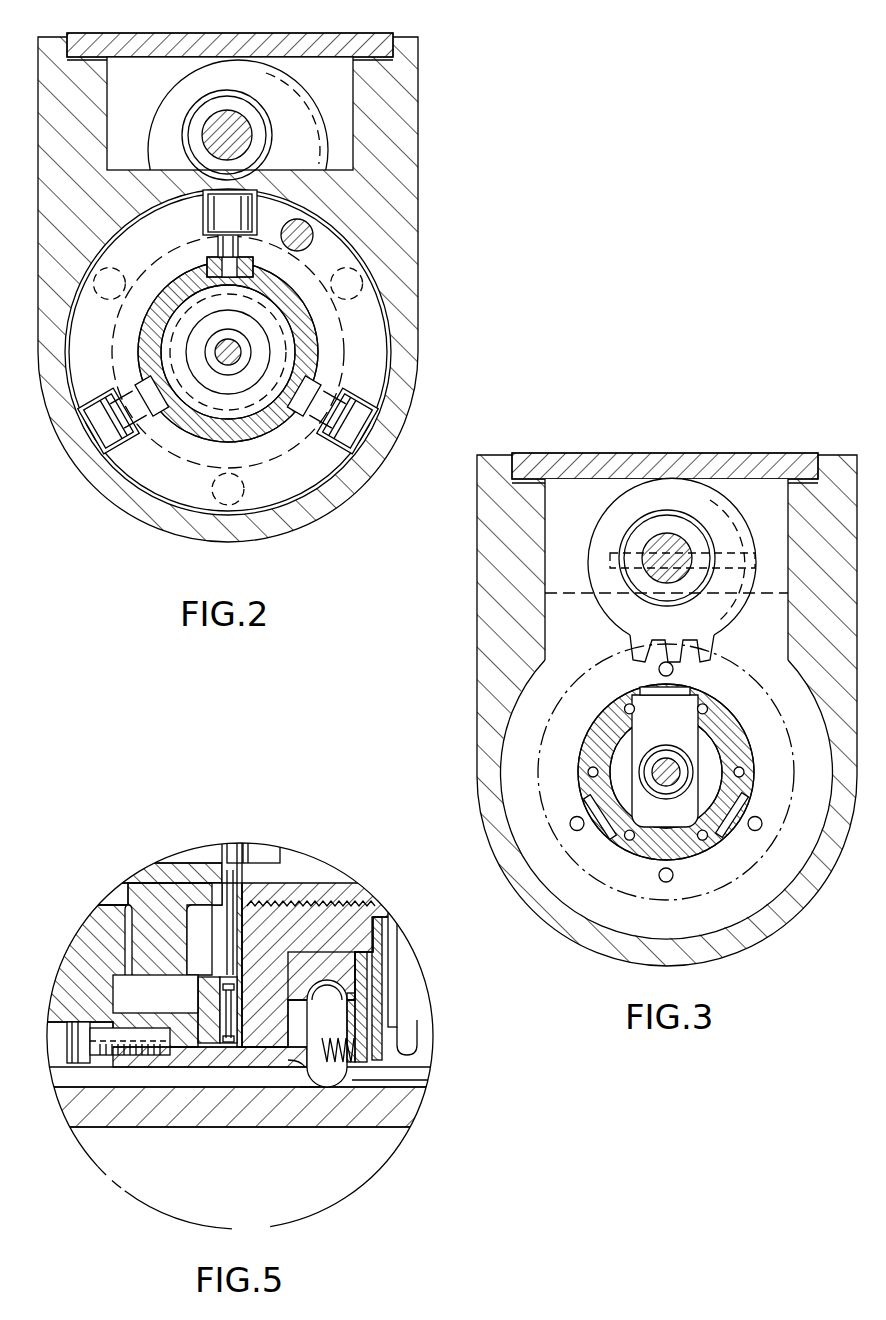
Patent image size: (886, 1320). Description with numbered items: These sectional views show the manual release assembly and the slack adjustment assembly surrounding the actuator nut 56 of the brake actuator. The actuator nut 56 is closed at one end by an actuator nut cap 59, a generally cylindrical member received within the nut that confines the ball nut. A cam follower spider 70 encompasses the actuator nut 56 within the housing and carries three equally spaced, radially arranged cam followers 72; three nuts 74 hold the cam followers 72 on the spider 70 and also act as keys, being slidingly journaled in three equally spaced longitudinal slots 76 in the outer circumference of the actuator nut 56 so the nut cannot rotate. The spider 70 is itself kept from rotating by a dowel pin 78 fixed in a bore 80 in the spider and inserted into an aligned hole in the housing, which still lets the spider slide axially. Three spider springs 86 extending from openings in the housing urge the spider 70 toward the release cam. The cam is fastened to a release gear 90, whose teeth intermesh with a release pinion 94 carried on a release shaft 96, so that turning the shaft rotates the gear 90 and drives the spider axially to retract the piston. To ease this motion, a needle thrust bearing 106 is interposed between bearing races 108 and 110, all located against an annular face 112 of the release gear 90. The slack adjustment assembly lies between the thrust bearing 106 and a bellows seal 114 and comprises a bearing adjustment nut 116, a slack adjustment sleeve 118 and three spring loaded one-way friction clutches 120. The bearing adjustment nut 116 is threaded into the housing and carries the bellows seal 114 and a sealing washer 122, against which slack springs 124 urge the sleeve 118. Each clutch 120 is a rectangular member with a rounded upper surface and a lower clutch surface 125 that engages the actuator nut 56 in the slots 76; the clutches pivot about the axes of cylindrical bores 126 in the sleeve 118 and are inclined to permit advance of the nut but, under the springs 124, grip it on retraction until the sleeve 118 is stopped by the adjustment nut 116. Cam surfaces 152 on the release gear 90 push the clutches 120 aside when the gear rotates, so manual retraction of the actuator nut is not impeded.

In FIG. 3, the actuator nut 56 is at (598, 745).
In FIG. 3, the actuator nut cap 59 is at (706, 760).
In FIG. 2, the cam follower spider 70 is at (306, 470).
In FIG. 2, the cam followers 72 is at (383, 463).
In FIG. 2, the nuts 74 is at (315, 384).
In FIG. 2, the longitudinal slots 76 is at (253, 262).
In FIG. 3, the longitudinal slots 76 is at (740, 830).
In FIG. 2, the dowel pin 78 is at (300, 243).
In FIG. 2, the bore 80 is at (313, 230).
In FIG. 2, the spider springs 86 is at (246, 494).
In FIG. 3, the release gear 90 is at (550, 757).
In FIG. 3, the release pinion 94 is at (700, 497).
In FIG. 3, the release shaft 96 is at (661, 540).
In FIG. 5, the needle thrust bearing 106 is at (213, 987).
In FIG. 5, the bearing race 108 is at (150, 887).
In FIG. 5, the bearing race 110 is at (242, 973).
In FIG. 5, the annular face 112 is at (223, 998).
In FIG. 5, the bellows seal 114 is at (400, 1010).
In FIG. 5, the bearing adjustment nut 116 is at (292, 920).
In FIG. 5, the slack adjustment sleeve 118 is at (323, 960).
In FIG. 5, the one-way clutches 120 is at (330, 1025).
In FIG. 5, the sealing washer 122 is at (390, 980).
In FIG. 5, the slack springs 124 is at (352, 1072).
In FIG. 5, the lower clutch surfaces 125 is at (307, 1090).
In FIG. 5, the cylindrical bores 126 is at (377, 987).
In FIG. 5, the cam surfaces 152 is at (288, 1060).